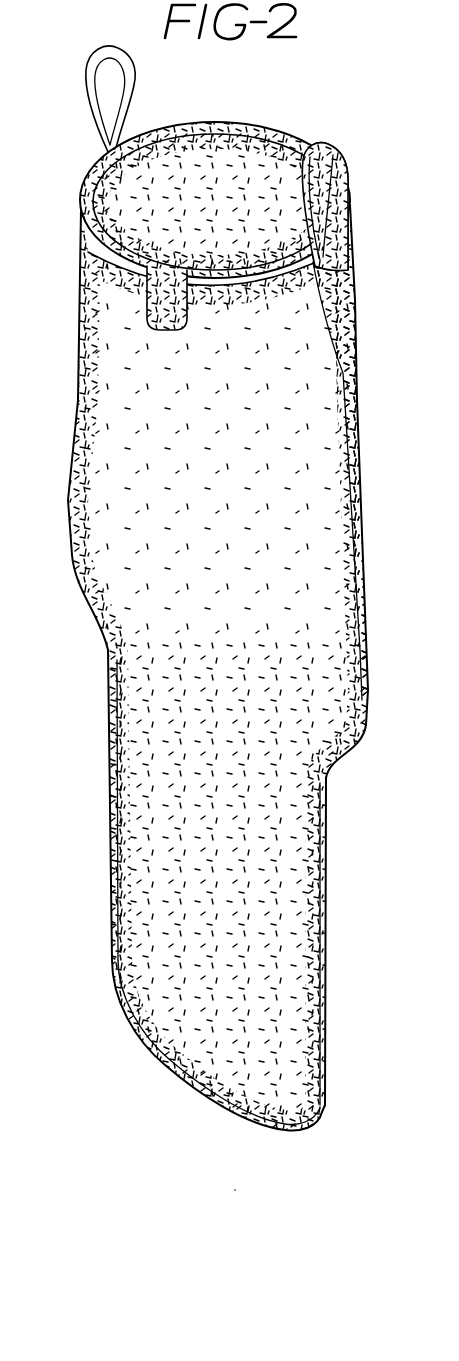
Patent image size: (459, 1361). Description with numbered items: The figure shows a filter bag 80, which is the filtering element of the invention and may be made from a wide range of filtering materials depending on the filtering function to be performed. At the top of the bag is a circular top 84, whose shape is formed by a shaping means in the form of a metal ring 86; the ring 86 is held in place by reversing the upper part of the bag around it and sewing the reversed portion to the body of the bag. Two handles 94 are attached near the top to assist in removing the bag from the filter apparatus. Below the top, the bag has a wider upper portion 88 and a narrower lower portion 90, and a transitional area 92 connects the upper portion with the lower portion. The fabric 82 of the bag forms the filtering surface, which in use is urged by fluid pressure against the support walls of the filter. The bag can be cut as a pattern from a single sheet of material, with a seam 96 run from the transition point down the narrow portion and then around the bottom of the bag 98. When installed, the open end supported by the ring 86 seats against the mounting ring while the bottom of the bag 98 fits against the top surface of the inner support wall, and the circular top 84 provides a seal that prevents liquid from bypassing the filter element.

The filter bag 80 is at (378, 112).
The fabric 82 is at (273, 316).
The circular top 84 is at (243, 170).
The metal ring 86 is at (147, 290).
The upper portion 88 is at (283, 363).
The lower portion 90 is at (243, 918).
The transitional area 92 is at (93, 610).
The handles 94 is at (130, 72).
The seam 96 is at (357, 397).
The bottom of the bag 98 is at (204, 1090).